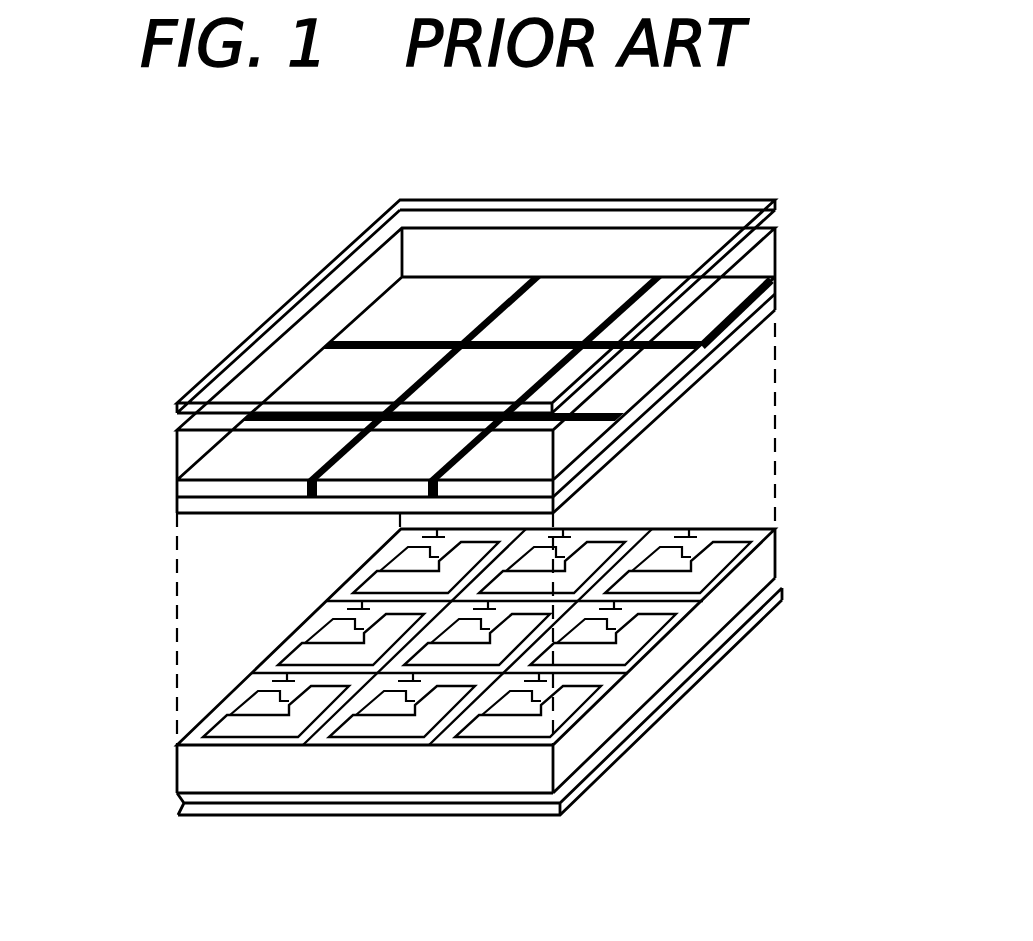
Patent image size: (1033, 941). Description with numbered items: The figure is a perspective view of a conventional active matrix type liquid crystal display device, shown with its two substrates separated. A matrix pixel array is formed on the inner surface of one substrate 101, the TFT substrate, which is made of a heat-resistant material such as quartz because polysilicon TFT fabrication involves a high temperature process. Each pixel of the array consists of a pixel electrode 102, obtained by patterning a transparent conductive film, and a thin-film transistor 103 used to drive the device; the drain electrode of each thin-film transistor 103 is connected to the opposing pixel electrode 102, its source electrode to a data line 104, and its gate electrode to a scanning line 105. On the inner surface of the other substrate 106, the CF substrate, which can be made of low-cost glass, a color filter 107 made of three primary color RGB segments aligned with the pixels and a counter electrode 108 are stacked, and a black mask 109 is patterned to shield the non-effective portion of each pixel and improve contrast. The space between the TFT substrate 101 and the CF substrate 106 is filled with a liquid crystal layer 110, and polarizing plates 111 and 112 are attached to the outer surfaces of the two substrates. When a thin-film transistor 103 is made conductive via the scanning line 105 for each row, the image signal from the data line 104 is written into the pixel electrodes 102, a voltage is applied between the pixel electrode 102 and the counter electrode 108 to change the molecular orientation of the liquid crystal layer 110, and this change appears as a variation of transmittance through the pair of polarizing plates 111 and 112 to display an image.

The substrate 101 is at (197, 777).
The pixel electrode 102 is at (567, 698).
The thin-film transistor 103 is at (505, 708).
The data line 104 is at (680, 590).
The scanning line 105 is at (640, 608).
The substrate 106 is at (195, 452).
The color filter 107 is at (778, 274).
The counter electrode 108 is at (777, 304).
The black mask 109 is at (536, 276).
The liquid crystal layer 110 is at (777, 455).
The polarizing plate 111 is at (178, 812).
The polarizing plate 112 is at (175, 404).